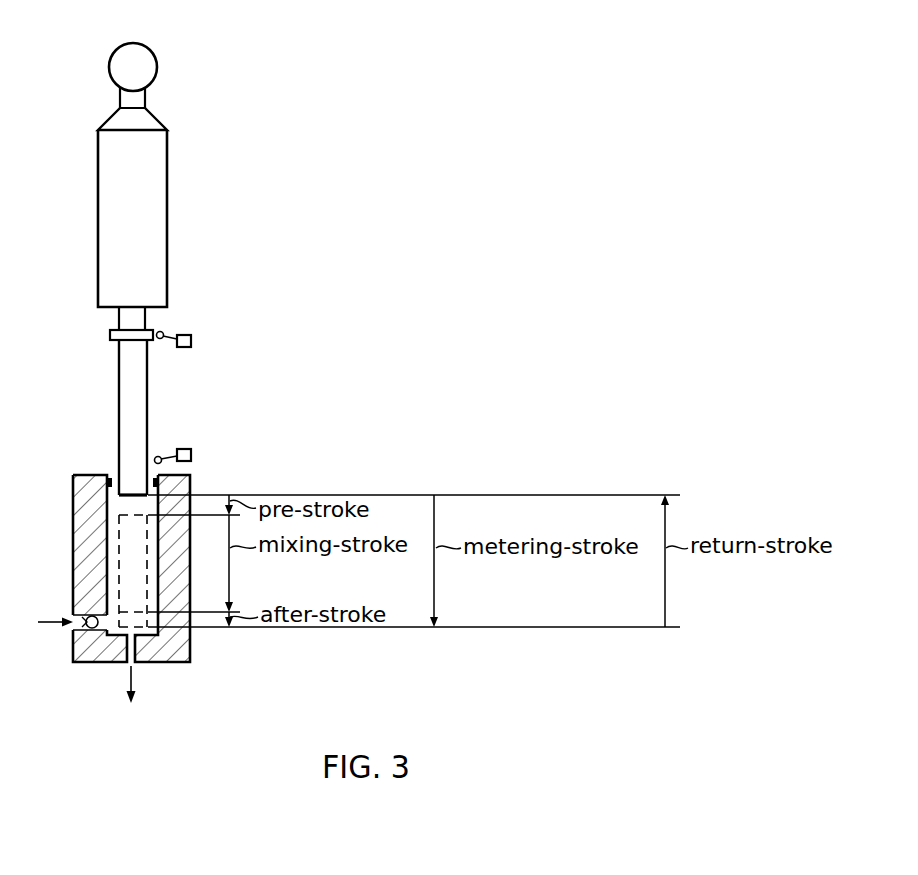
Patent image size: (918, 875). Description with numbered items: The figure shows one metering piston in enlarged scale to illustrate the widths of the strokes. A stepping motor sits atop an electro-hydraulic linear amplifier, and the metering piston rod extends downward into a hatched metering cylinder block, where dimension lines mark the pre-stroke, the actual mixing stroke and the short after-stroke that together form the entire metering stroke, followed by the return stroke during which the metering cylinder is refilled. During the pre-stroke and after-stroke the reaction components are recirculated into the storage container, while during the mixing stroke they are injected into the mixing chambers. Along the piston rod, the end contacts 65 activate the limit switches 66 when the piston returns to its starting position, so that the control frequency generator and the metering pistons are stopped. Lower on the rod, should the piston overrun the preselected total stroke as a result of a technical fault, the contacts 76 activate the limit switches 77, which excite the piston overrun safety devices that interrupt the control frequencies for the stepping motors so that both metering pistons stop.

The end contacts 65 is at (163, 331).
The limit switches 66 is at (191, 338).
The contacts 76 is at (160, 456).
The limit switches 77 is at (191, 452).